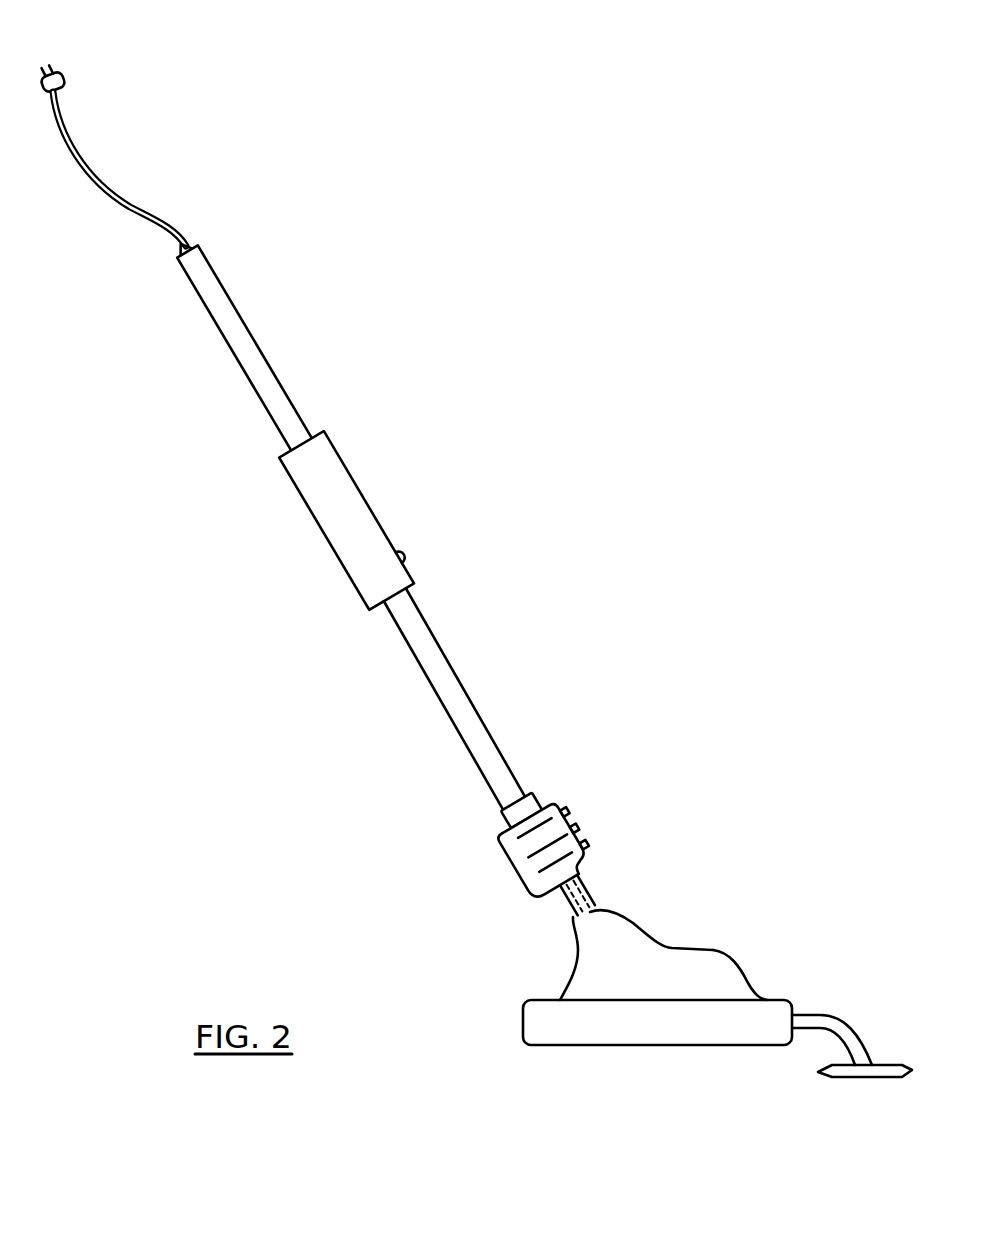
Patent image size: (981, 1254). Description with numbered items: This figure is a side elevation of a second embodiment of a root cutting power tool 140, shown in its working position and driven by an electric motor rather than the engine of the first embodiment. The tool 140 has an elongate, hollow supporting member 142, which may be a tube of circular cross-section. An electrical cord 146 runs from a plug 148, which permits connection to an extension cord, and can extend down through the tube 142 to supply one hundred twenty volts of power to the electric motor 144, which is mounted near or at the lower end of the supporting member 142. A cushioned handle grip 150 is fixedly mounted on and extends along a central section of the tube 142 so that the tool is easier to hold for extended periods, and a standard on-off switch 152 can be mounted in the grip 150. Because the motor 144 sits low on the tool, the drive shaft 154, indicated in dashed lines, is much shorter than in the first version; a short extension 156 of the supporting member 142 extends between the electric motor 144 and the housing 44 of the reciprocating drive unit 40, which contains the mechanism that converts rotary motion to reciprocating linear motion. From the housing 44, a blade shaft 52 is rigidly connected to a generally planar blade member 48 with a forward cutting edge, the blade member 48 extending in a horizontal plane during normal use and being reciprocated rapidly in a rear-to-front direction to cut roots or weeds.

The tool 140 is at (371, 437).
The elongate hollow member 142 is at (422, 642).
The electric motor 144 is at (567, 802).
The electrical cord 146 is at (153, 213).
The plug 148 is at (66, 81).
The cushioned handle grip 150 is at (366, 522).
The on-off switch 152 is at (413, 553).
The drive shaft 154 is at (593, 884).
The short extension 156 is at (567, 912).
The reciprocating drive unit 40 is at (637, 948).
The housing 44 is at (728, 973).
The blade shaft 52 is at (817, 1015).
The blade member 48 is at (827, 1065).